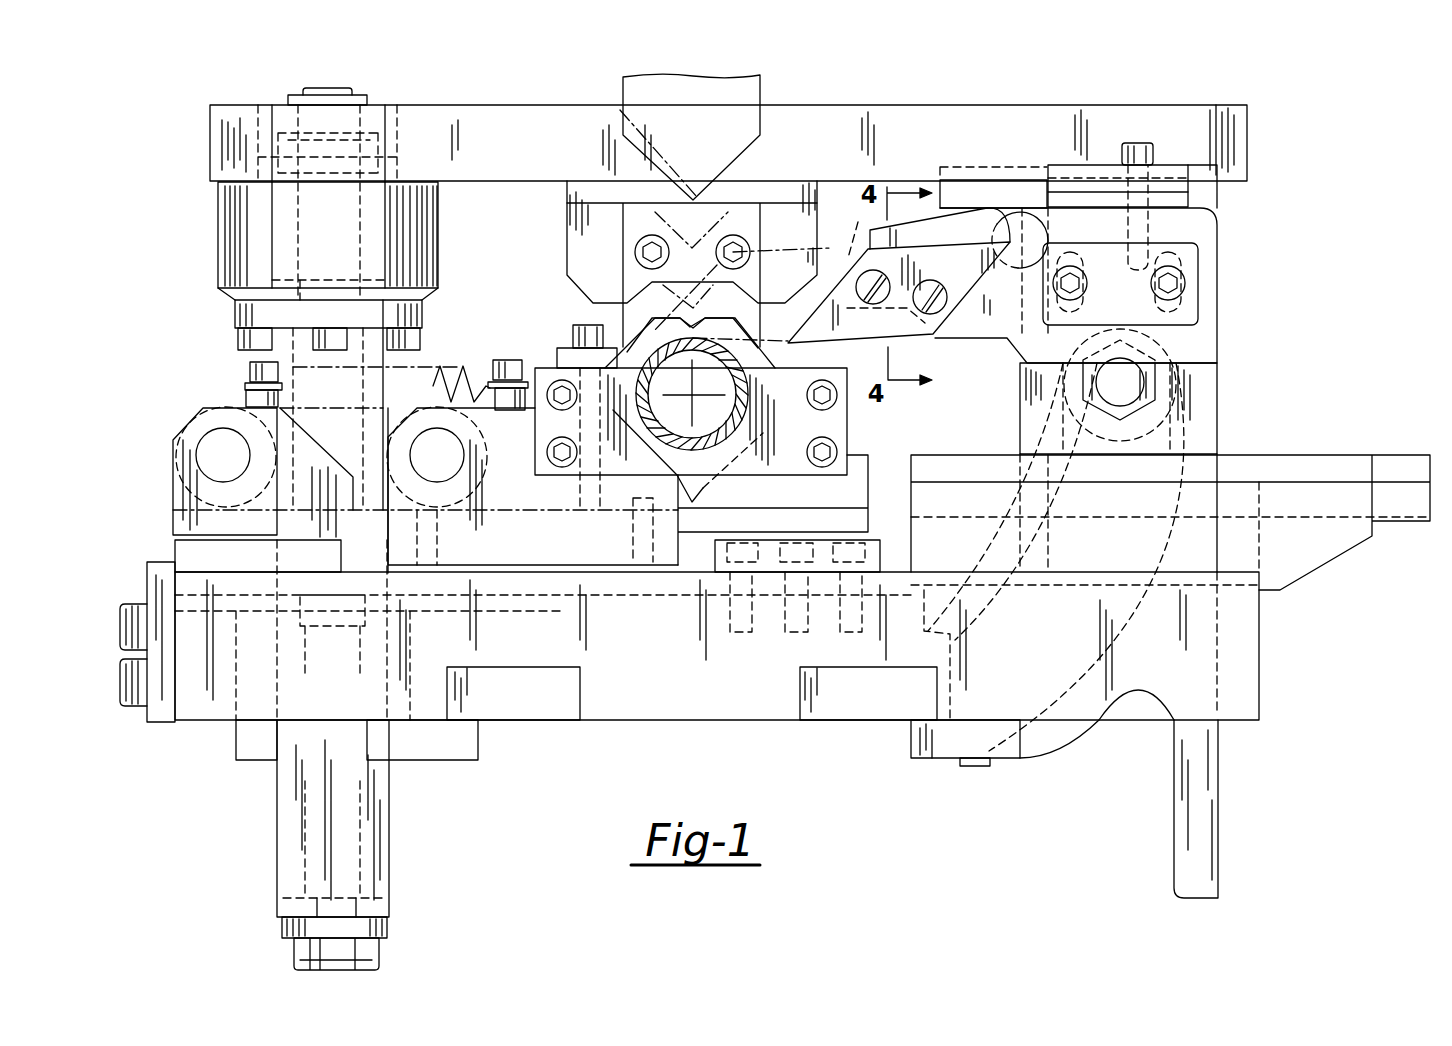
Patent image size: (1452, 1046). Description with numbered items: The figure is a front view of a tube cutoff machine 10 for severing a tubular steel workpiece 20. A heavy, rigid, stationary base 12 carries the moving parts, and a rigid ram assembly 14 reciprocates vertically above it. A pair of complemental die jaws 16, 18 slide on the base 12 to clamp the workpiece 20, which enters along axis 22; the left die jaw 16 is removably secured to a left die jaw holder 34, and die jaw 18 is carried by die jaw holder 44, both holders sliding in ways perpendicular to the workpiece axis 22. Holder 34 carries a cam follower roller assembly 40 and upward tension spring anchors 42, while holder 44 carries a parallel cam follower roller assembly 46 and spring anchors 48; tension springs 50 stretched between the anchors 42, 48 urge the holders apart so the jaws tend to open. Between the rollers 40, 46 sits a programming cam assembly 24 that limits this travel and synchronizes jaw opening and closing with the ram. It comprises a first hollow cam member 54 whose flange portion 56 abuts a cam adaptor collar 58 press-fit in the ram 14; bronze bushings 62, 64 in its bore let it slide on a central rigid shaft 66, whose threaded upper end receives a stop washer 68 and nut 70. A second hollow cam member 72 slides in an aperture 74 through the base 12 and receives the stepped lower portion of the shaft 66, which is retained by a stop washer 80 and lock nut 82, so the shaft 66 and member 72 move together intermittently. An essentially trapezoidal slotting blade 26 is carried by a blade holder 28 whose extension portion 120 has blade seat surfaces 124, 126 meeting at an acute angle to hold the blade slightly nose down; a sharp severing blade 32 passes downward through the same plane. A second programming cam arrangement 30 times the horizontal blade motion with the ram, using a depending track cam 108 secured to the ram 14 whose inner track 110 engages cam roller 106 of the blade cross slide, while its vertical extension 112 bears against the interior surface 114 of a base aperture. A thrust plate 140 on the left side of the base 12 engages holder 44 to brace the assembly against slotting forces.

The cutoff machine 10 is at (190, 332).
The base 12 is at (710, 703).
The ram assembly 14 is at (565, 106).
The left die jaw 16 is at (610, 342).
The die jaw 18 is at (782, 393).
The tubular steel workpiece 20 is at (728, 442).
The axis 22 is at (694, 392).
The programming cam assembly 24 is at (227, 221).
The slotting blade 26 is at (895, 325).
The blade holder 28 is at (993, 348).
The second programming cam arrangement 30 is at (1226, 302).
The severing blade 32 is at (702, 492).
The left die jaw holder 34 is at (423, 423).
The cam follower roller assembly 40 is at (480, 460).
The tension spring anchors 42 is at (505, 360).
The die jaw holder 44 is at (175, 495).
The cam follower roller assembly 46 is at (222, 406).
The spring anchors 48 is at (248, 373).
The tension springs 50 is at (448, 367).
The first cam member 54 is at (312, 396).
The flange portion 56 is at (423, 310).
The cam adaptor collar 58 is at (255, 258).
The bronze bushing 62 is at (438, 260).
The bronze bushing 64 is at (468, 488).
The shaft 66 is at (352, 852).
The stop washer 68 is at (390, 142).
The nut 70 is at (368, 100).
The second cam member 72 is at (277, 838).
The aperture 74 is at (290, 736).
The stop washer 80 is at (389, 926).
The lock nut 82 is at (377, 956).
The cam roller 106 is at (1205, 424).
The track cam 108 is at (1218, 378).
The inner track 110 is at (1108, 612).
The vertical extension 112 is at (1207, 769).
The interior surface 114 is at (1215, 645).
The extension portion 120 is at (841, 233).
The blade seat surface 124 is at (920, 222).
The blade seat surface 126 is at (953, 303).
The thrust plate 140 is at (152, 573).